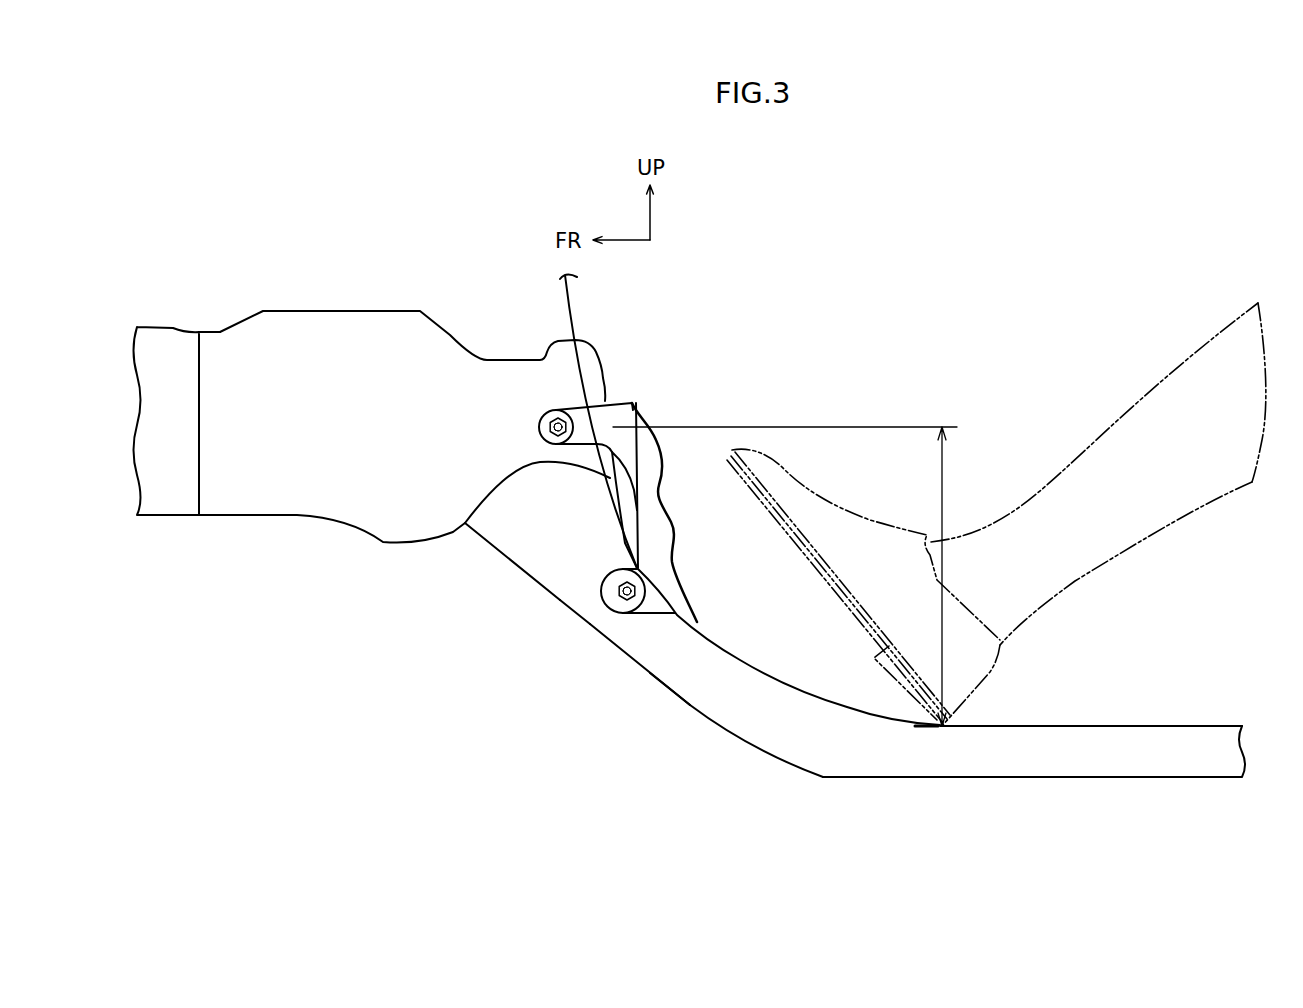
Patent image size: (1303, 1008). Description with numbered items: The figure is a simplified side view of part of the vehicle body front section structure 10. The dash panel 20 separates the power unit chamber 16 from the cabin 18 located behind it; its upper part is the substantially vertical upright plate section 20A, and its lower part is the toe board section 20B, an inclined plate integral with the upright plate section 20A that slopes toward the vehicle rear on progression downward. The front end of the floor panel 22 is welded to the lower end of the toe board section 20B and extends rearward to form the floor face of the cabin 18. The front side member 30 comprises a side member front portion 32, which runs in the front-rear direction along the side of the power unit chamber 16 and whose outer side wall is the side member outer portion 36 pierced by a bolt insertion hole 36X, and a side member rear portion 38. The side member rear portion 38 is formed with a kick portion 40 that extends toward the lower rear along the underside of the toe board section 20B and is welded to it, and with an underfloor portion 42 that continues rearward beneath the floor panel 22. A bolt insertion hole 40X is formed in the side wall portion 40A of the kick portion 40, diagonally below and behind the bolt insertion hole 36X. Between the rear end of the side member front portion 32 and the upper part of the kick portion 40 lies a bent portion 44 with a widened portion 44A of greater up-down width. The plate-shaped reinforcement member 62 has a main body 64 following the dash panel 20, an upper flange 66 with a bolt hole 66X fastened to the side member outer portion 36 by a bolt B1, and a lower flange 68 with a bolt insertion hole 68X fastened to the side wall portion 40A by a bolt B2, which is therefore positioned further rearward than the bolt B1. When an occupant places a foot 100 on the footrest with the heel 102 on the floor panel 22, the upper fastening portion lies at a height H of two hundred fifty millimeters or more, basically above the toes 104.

The vehicle body front section structure 10 is at (431, 180).
The power unit chamber 16 is at (327, 291).
The cabin 18 is at (996, 497).
The dash panel 20 is at (722, 506).
The upright plate section 20A is at (575, 322).
The toe board section 20B is at (772, 678).
The floor panel 22 is at (1067, 727).
The front side member 30 is at (690, 540).
The side member front portion 32 is at (265, 532).
The side member outer portion 36 is at (339, 514).
The bolt insertion hole 36X is at (540, 433).
The side member rear portion 38 is at (713, 759).
The kick portion 40 is at (634, 674).
The side wall portion 40A is at (668, 672).
The bolt insertion hole 40X is at (618, 618).
The underfloor portion 42 is at (1046, 787).
The bent portion 44 is at (453, 576).
The widened portion 44A is at (580, 603).
The reinforcement member 62 is at (621, 495).
The main body 64 is at (638, 510).
The upper flange 66 is at (578, 410).
The bolt hole 66X is at (557, 405).
The lower flange 68 is at (643, 612).
The bolt insertion hole 68X is at (620, 566).
The foot 100 is at (866, 502).
The heel 102 is at (965, 722).
The toes 104 is at (725, 444).
The bolt B1 is at (541, 418).
The bolt B2 is at (604, 590).
The height H is at (943, 477).